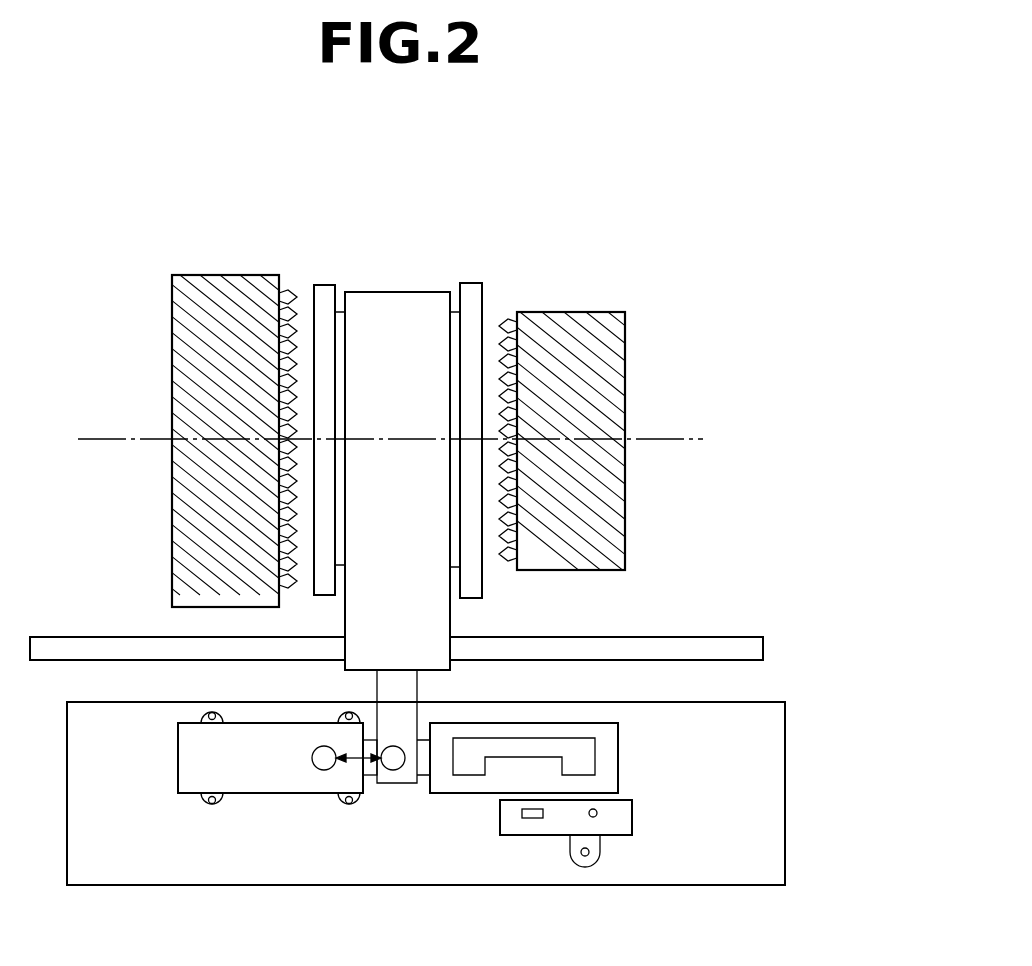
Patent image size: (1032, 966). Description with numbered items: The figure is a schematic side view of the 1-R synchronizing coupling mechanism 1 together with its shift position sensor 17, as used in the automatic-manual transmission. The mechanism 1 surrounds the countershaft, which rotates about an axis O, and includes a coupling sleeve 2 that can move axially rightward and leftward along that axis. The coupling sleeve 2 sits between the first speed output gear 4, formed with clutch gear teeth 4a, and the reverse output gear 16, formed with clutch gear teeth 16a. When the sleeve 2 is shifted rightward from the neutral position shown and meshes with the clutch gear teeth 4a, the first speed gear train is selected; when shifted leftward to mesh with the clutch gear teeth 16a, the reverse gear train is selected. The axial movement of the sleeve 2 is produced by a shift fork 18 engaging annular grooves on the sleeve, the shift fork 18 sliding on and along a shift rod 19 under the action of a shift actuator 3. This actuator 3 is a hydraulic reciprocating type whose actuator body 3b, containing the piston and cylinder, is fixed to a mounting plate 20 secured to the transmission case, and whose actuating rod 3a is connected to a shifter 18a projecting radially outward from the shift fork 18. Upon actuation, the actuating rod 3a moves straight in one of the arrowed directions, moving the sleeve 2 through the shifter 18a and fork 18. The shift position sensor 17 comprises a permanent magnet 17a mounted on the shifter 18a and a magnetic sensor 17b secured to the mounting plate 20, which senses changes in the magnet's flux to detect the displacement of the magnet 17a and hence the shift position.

The 1-R synchronizing coupling mechanism 1 is at (348, 262).
The coupling sleeve 2 is at (470, 283).
The shift actuator 3 is at (291, 824).
The actuating rod 3a is at (372, 785).
The actuator body 3b is at (240, 773).
The first speed output gear 4 is at (625, 340).
The clutch gear teeth 4a is at (503, 312).
The reverse output gear 16 is at (172, 366).
The clutch gear teeth 16a is at (294, 290).
The shift position sensor 17 is at (673, 795).
The permanent magnet 17a is at (595, 755).
The magnetic sensor 17b is at (632, 818).
The shift fork 18 is at (452, 622).
The shifter 18a is at (405, 785).
The shift rod 19 is at (738, 636).
The mounting plate 20 is at (787, 750).
The axis O is at (672, 438).